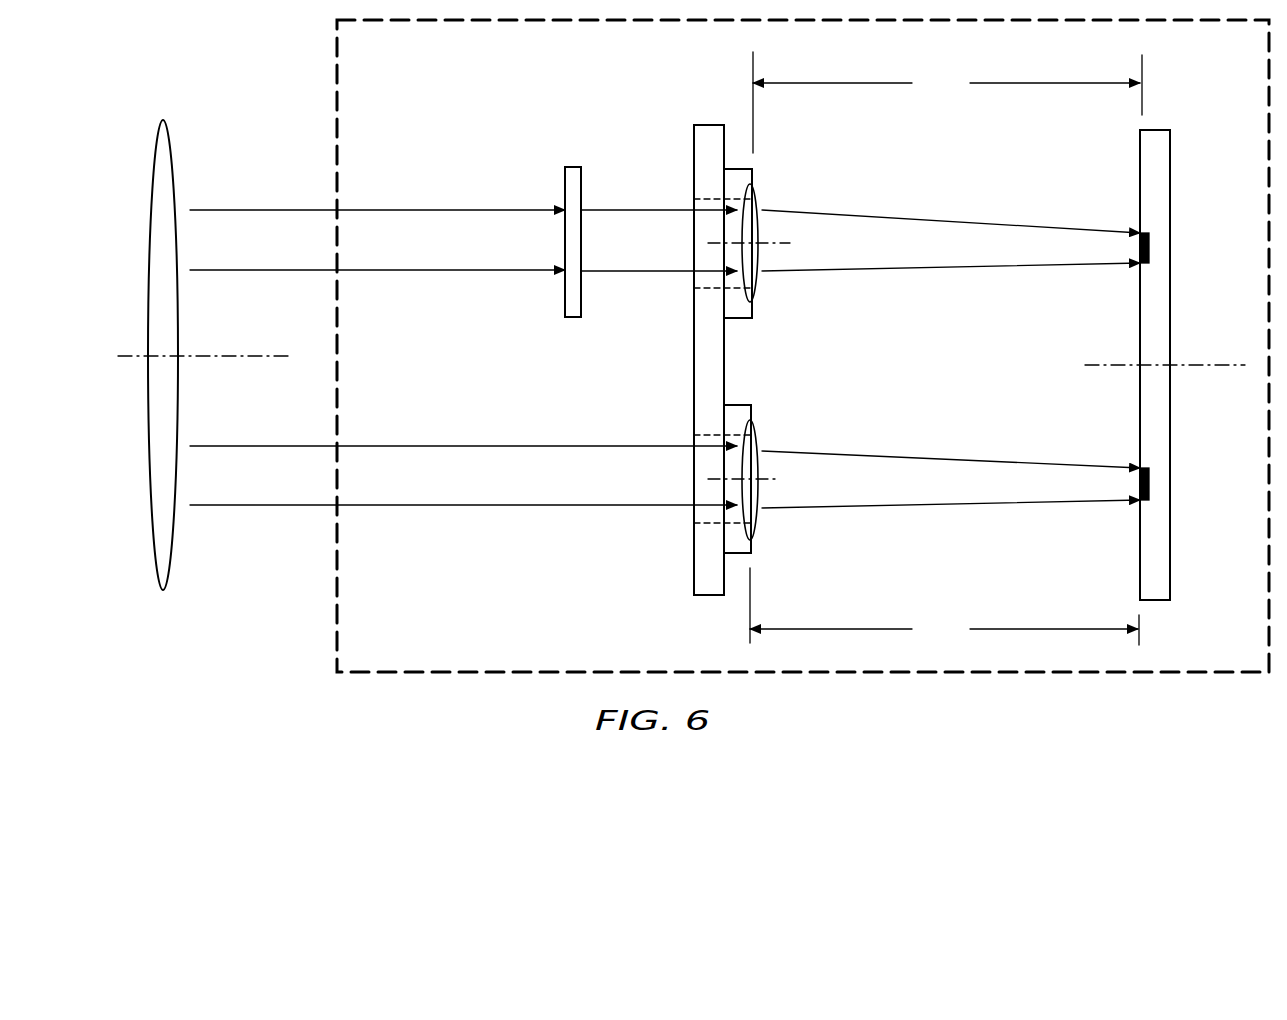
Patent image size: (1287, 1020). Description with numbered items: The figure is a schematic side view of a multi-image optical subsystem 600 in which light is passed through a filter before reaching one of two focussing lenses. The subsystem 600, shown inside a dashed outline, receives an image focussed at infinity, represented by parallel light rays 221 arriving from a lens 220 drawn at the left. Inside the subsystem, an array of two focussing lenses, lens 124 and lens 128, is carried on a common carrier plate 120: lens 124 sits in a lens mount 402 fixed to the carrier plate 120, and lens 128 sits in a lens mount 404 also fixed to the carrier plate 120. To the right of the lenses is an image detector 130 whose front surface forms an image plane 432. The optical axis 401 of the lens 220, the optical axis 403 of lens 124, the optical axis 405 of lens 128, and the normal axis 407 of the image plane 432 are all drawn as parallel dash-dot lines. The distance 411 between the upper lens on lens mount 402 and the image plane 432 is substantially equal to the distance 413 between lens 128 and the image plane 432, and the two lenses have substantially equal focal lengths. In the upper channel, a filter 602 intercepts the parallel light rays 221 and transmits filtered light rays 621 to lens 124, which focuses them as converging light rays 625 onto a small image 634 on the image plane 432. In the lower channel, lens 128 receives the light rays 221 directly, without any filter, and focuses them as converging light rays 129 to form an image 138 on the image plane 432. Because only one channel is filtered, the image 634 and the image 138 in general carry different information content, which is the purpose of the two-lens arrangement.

The carrier plate 120 is at (694, 583).
The lens 124 is at (758, 290).
The lens 128 is at (758, 525).
The light rays 129 is at (893, 458).
The image detector 130 is at (1152, 572).
The image 138 is at (1150, 486).
The lens 220 is at (161, 592).
The parallel light rays 221 is at (248, 209).
The optical axis 401 is at (236, 354).
The lens mount 402 is at (752, 173).
The optical axis 403 is at (777, 247).
The lens mount 404 is at (752, 409).
The optical axis 405 is at (777, 483).
The normal axis 407 is at (1086, 365).
The distance 411 is at (947, 102).
The distance 413 is at (944, 606).
The image plane 432 is at (1140, 141).
The multi-image optical subsystem 600 is at (335, 623).
The filter 602 is at (573, 167).
The light rays 621 is at (632, 210).
The light rays 625 is at (893, 219).
The image 634 is at (1150, 248).